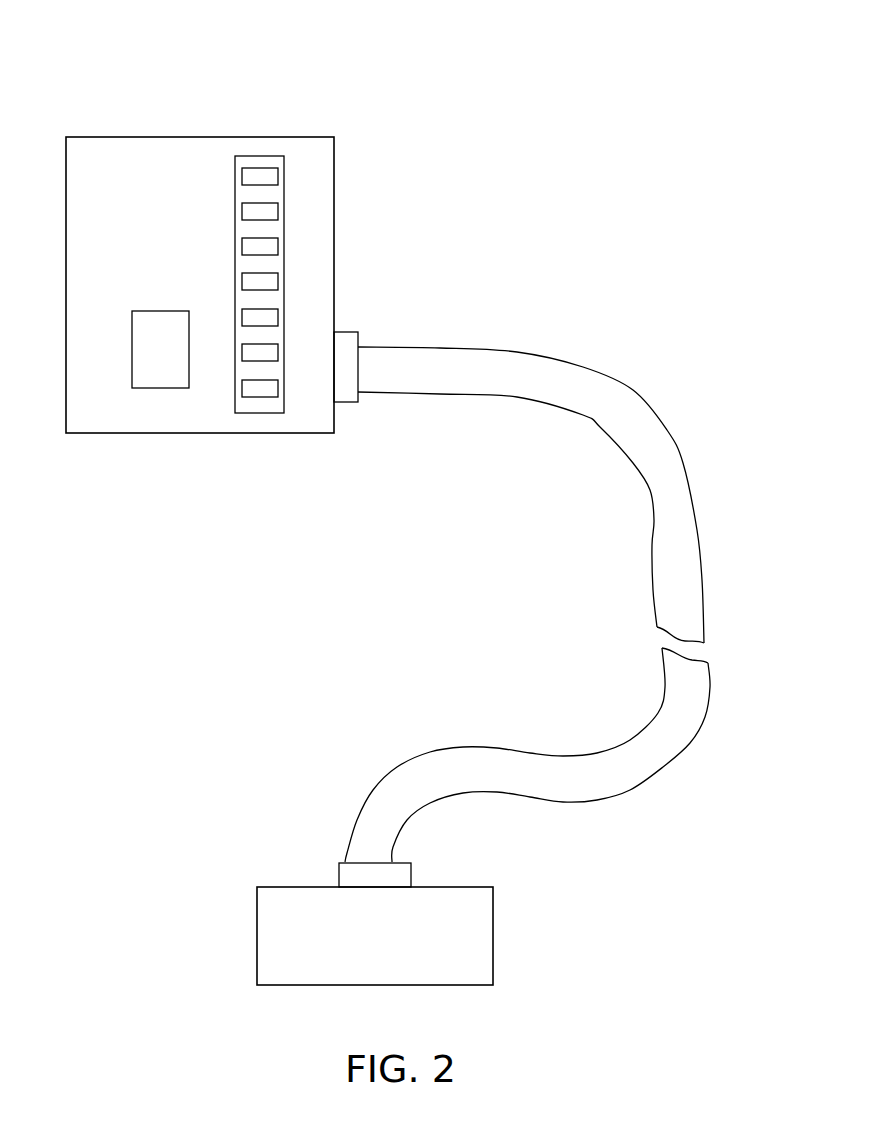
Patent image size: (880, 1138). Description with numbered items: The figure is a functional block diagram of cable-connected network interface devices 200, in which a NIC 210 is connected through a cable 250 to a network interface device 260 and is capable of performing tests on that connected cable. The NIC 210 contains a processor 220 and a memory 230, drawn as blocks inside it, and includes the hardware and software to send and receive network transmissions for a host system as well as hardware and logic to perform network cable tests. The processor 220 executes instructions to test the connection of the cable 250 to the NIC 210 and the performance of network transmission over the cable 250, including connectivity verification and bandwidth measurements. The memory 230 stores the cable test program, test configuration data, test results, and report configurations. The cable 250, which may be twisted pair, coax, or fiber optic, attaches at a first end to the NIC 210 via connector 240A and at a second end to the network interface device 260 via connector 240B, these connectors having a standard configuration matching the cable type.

The cable-connected network interface devices 200 is at (606, 56).
The NIC 210 is at (138, 137).
The processor 220 is at (150, 388).
The memory 230 is at (284, 200).
The connector 240A is at (345, 402).
The connector 240B is at (339, 870).
The cable 250 is at (445, 345).
The network interface device 260 is at (493, 926).